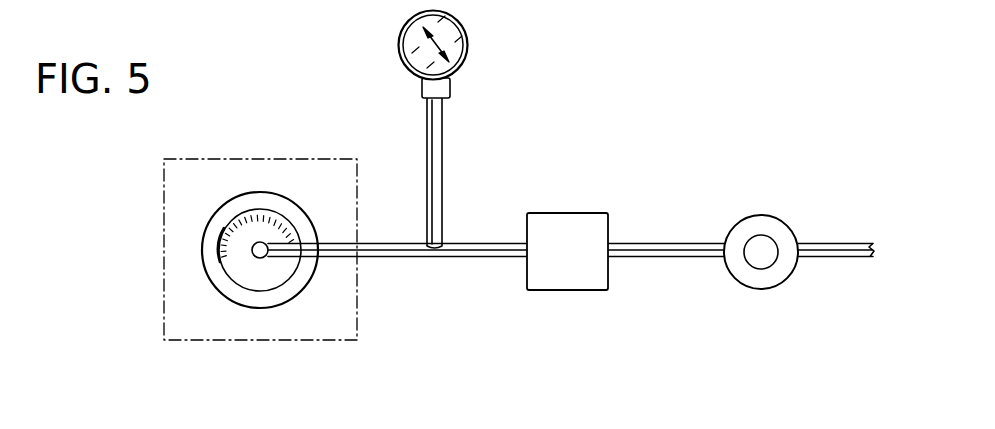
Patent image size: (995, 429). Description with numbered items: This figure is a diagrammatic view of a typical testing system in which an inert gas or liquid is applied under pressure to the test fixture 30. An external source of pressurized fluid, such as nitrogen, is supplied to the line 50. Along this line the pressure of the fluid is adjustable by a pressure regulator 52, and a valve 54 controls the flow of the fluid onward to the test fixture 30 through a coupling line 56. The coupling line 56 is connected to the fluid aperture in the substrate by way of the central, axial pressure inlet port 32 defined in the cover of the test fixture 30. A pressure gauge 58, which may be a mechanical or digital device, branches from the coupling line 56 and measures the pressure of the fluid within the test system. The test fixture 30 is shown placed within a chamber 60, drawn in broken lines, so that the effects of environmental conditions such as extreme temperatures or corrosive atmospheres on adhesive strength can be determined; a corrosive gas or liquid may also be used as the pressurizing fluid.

The test fixture 30 is at (203, 267).
The fluid inlet port 32 is at (260, 242).
The line 50 is at (833, 258).
The pressure regulator 52 is at (758, 215).
The valve 54 is at (563, 213).
The coupling line 56 is at (377, 257).
The pressure gauge 58 is at (468, 32).
The chamber 60 is at (165, 210).